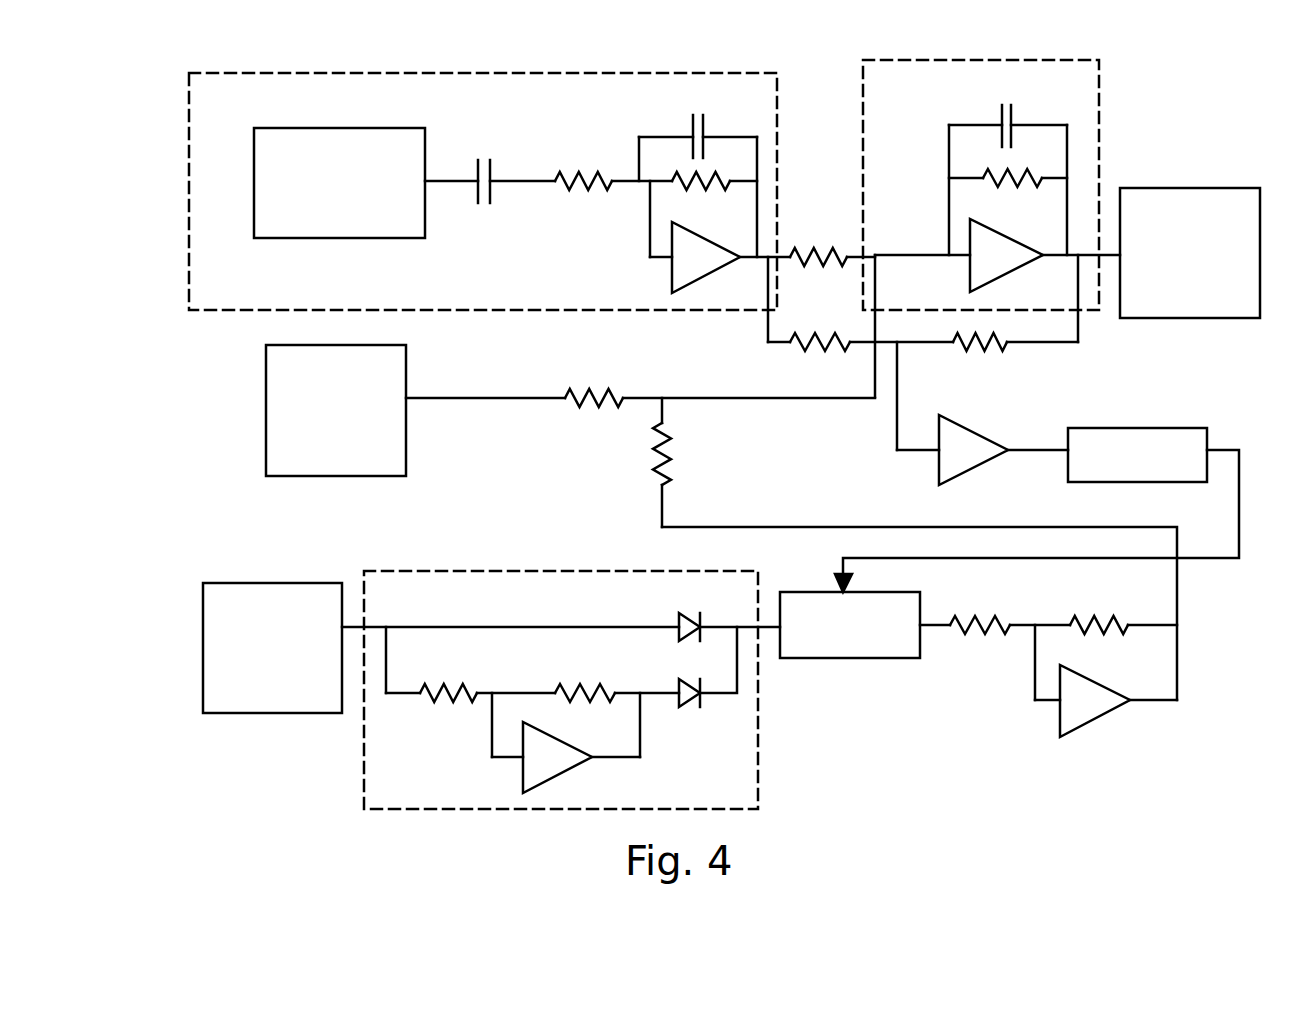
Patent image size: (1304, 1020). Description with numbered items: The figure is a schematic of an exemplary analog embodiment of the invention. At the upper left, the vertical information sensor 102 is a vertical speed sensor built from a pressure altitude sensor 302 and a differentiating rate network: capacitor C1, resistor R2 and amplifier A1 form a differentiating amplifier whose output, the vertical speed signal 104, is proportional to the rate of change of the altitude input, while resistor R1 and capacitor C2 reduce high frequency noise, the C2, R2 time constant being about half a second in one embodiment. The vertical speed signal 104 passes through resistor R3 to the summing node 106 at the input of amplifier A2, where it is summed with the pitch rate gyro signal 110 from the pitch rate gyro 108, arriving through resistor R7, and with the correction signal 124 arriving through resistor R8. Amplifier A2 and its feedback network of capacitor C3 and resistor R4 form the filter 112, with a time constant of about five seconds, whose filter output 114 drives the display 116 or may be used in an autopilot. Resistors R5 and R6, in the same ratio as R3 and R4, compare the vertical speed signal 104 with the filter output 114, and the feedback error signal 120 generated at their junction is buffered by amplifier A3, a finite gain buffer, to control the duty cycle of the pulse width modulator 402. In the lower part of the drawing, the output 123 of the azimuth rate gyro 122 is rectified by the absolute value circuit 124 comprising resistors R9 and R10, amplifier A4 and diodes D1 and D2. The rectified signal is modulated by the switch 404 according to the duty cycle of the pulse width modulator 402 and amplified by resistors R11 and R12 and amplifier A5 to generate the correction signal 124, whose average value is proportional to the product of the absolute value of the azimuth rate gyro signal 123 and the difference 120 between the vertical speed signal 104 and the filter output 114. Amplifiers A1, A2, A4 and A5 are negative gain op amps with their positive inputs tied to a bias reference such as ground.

The vertical information sensor 102 is at (467, 73).
The pressure altitude sensor 302 is at (310, 128).
The vertical speed signal 104 is at (742, 225).
The summing node 106 is at (887, 255).
The pitch rate gyro 108 is at (266, 410).
The pitch rate gyro signal 110 is at (437, 398).
The filter 112 is at (960, 60).
The filter output 114 is at (1066, 202).
The display 116 is at (1142, 188).
The feedback error signal 120 is at (897, 422).
The azimuth rate gyro 122 is at (247, 583).
The output of the azimuth rate gyro 123 is at (427, 627).
The absolute value circuit 124 is at (745, 527).
The pulse width modulator 402 is at (1082, 428).
The switch 404 is at (835, 658).
The capacitor C1 is at (490, 170).
The capacitor C2 is at (702, 133).
The capacitor C3 is at (1012, 120).
The resistor R1 is at (567, 170).
The resistor R2 is at (694, 190).
The resistor R3 is at (805, 250).
The resistor R4 is at (1005, 183).
The resistor R5 is at (803, 332).
The resistor R6 is at (973, 352).
The resistor R7 is at (572, 393).
The resistor R8 is at (668, 460).
The resistor R9 is at (458, 685).
The resistor R10 is at (603, 685).
The resistor R11 is at (993, 617).
The resistor R12 is at (1108, 617).
The amplifier A1 is at (706, 257).
The amplifier A2 is at (1006, 255).
The amplifier A3 is at (973, 450).
The amplifier A4 is at (566, 743).
The amplifier A5 is at (1106, 681).
The diode D1 is at (696, 604).
The diode D2 is at (696, 670).